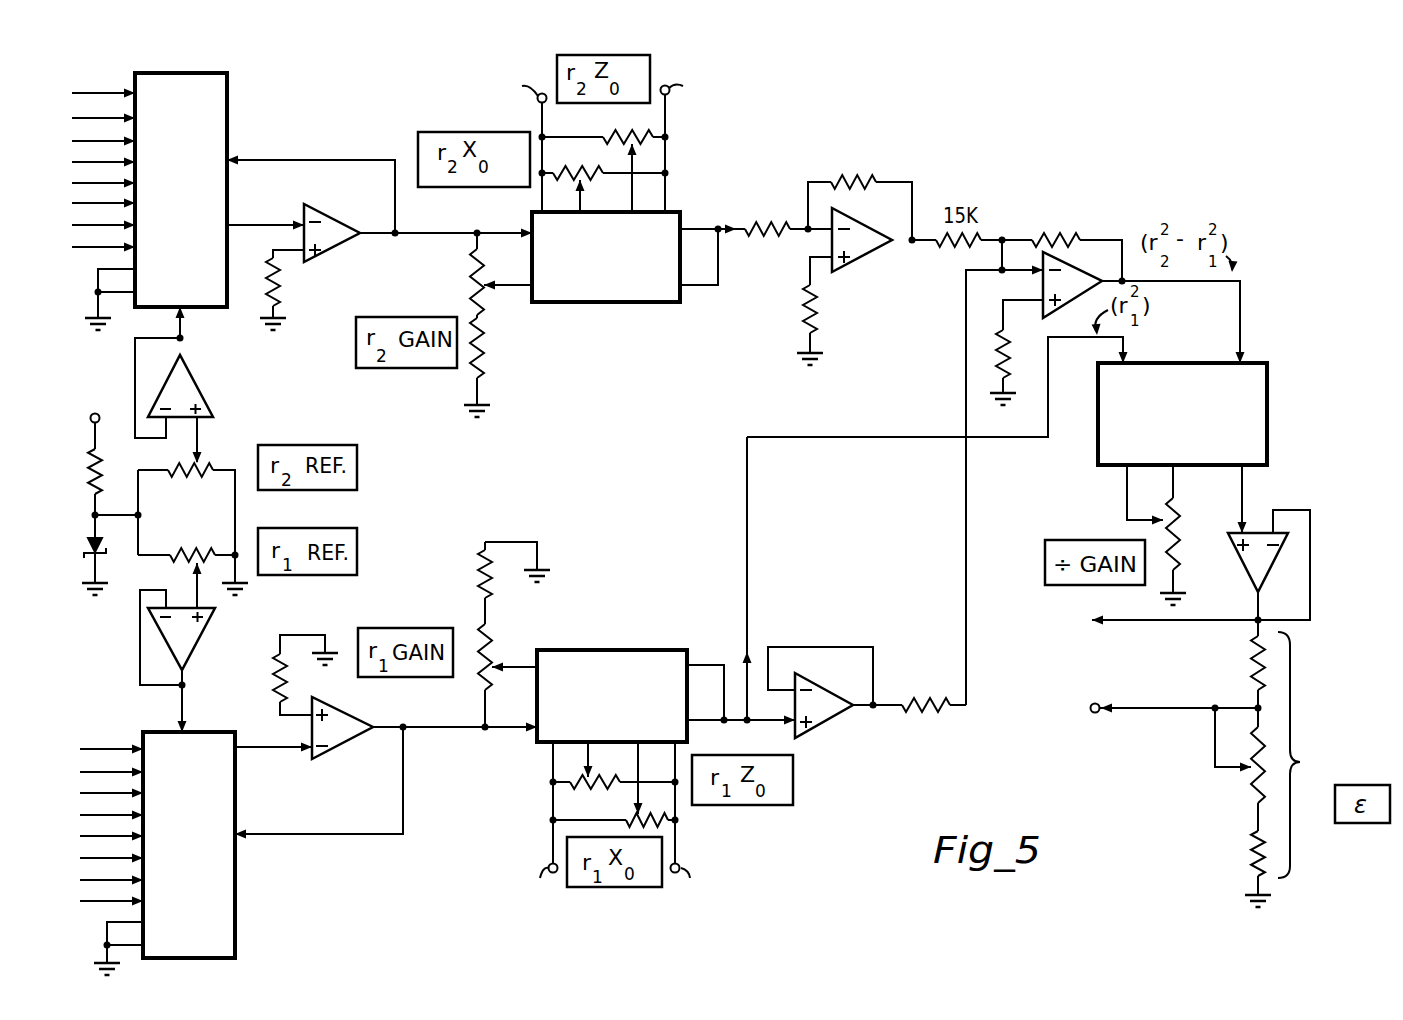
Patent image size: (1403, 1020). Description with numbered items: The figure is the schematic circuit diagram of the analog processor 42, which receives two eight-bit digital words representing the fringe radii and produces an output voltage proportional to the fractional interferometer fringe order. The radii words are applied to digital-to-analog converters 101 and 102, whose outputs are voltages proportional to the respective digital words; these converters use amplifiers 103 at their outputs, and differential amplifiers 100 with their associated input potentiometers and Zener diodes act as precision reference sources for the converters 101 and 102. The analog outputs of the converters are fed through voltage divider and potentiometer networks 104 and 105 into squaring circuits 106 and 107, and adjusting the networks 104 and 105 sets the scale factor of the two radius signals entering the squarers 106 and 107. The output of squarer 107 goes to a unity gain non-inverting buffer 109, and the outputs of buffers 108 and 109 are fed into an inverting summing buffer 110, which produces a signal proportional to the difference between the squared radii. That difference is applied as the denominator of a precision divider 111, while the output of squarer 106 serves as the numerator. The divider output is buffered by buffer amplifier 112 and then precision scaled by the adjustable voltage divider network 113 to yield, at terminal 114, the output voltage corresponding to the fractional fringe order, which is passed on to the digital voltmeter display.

The analog processor 42 is at (391, 134).
The differential amplifier 100 is at (203, 396).
The digital-to-analog converter 101 is at (236, 917).
The digital-to-analog converter 102 is at (227, 112).
The operational amplifier 103 is at (340, 222).
The voltage divider and potentiometer network 104 is at (468, 617).
The voltage divider and potentiometer network 105 is at (458, 300).
The squaring circuit 106 is at (620, 650).
The squaring circuit 107 is at (608, 302).
The buffer 108 is at (862, 224).
The unity gain non-inverting buffer 109 is at (830, 692).
The inverting summing buffer 110 is at (1066, 264).
The precision divider 111 is at (1165, 363).
The buffer amplifier 112 is at (1252, 572).
The adjustable voltage divider network 113 is at (1275, 763).
The terminal 114 is at (1097, 703).